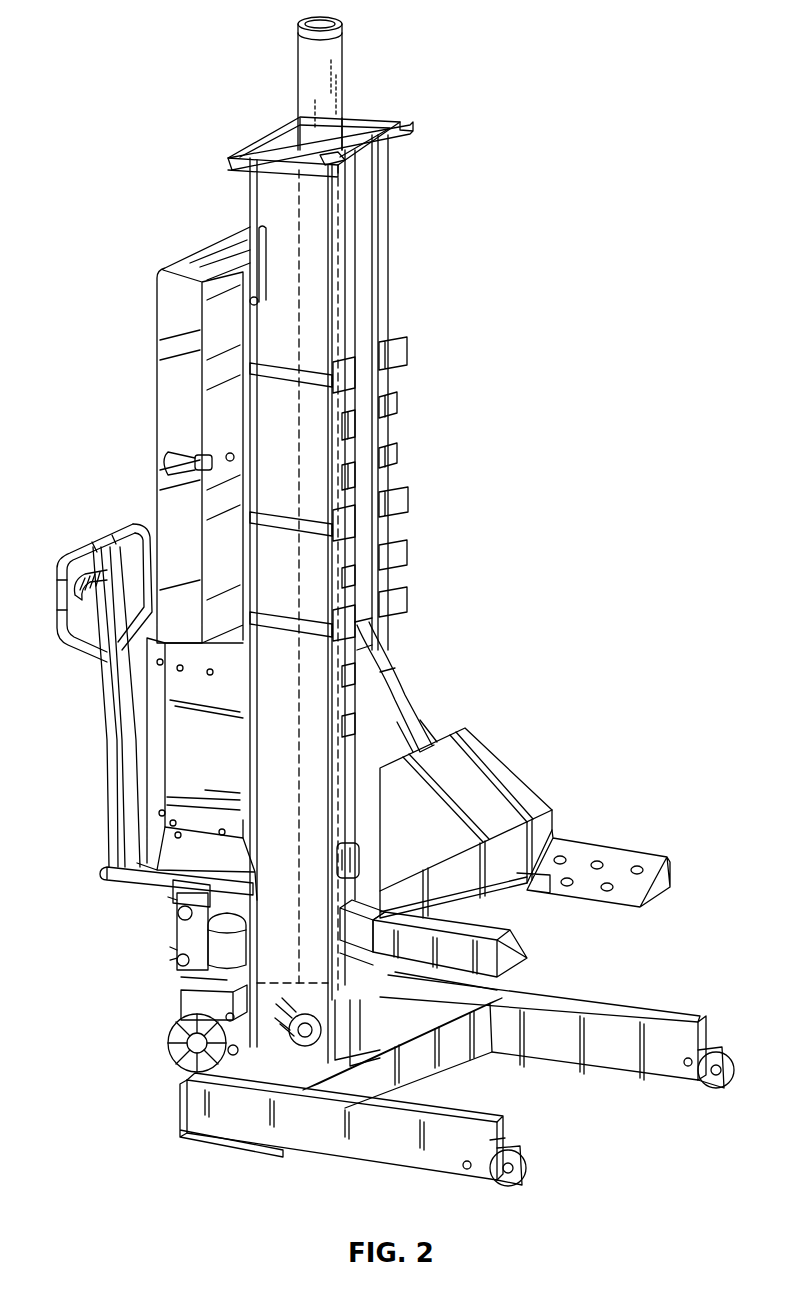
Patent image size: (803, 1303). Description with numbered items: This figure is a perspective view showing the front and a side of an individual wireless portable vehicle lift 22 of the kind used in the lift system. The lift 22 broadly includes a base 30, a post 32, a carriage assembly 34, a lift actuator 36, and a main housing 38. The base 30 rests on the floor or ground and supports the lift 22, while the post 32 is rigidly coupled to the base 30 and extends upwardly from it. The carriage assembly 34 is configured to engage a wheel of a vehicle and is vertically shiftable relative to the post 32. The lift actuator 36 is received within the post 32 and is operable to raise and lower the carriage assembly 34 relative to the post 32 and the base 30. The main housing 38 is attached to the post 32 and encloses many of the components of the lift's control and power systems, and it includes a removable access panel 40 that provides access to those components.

The vehicle lift 22 is at (184, 48).
The base 30 is at (185, 1100).
The post 32 is at (250, 212).
The carriage assembly 34 is at (512, 770).
The lift actuator 36 is at (315, 92).
The main housing 38 is at (190, 720).
The removable access panel 40 is at (157, 352).